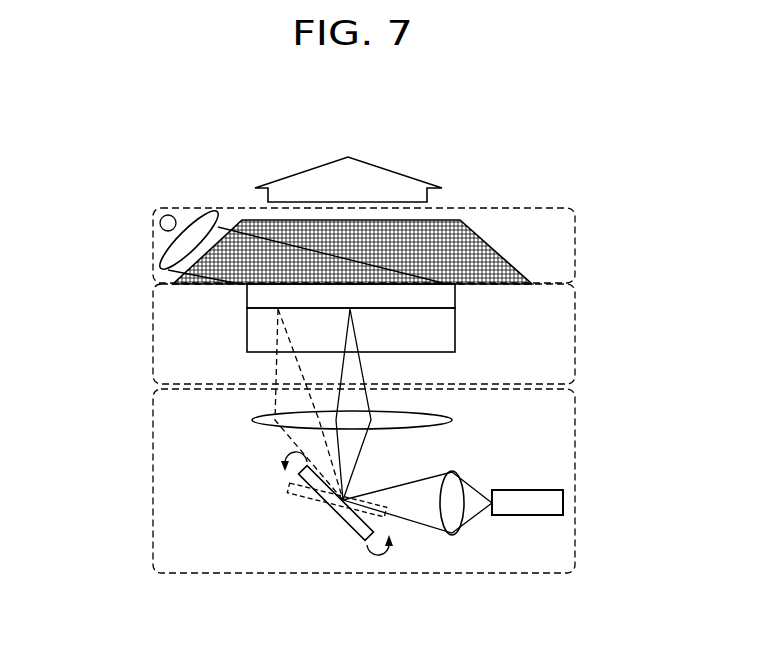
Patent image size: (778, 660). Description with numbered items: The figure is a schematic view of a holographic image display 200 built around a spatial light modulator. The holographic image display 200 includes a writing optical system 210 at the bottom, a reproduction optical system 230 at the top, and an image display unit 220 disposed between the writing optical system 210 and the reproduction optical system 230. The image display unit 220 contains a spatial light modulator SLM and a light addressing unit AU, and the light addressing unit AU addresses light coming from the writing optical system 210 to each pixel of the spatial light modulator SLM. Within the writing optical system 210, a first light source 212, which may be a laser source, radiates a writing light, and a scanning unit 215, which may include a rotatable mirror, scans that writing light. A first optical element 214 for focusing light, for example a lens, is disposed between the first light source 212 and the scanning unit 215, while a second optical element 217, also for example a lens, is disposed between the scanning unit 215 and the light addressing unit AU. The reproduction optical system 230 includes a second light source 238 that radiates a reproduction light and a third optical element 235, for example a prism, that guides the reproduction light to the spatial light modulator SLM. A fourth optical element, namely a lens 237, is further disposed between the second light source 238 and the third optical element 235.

The holographic image display 200 is at (168, 156).
The writing optical system 210 is at (575, 452).
The first light source 212 is at (563, 503).
The first optical element 214 is at (452, 535).
The scanning unit 215 is at (350, 545).
The second optical element 217 is at (262, 428).
The image display unit 220 is at (575, 365).
The spatial light modulator SLM is at (455, 296).
The light addressing unit AU is at (455, 340).
The reproduction optical system 230 is at (575, 232).
The third optical element 235 is at (510, 258).
The lens 237 is at (161, 266).
The second light source 238 is at (160, 223).